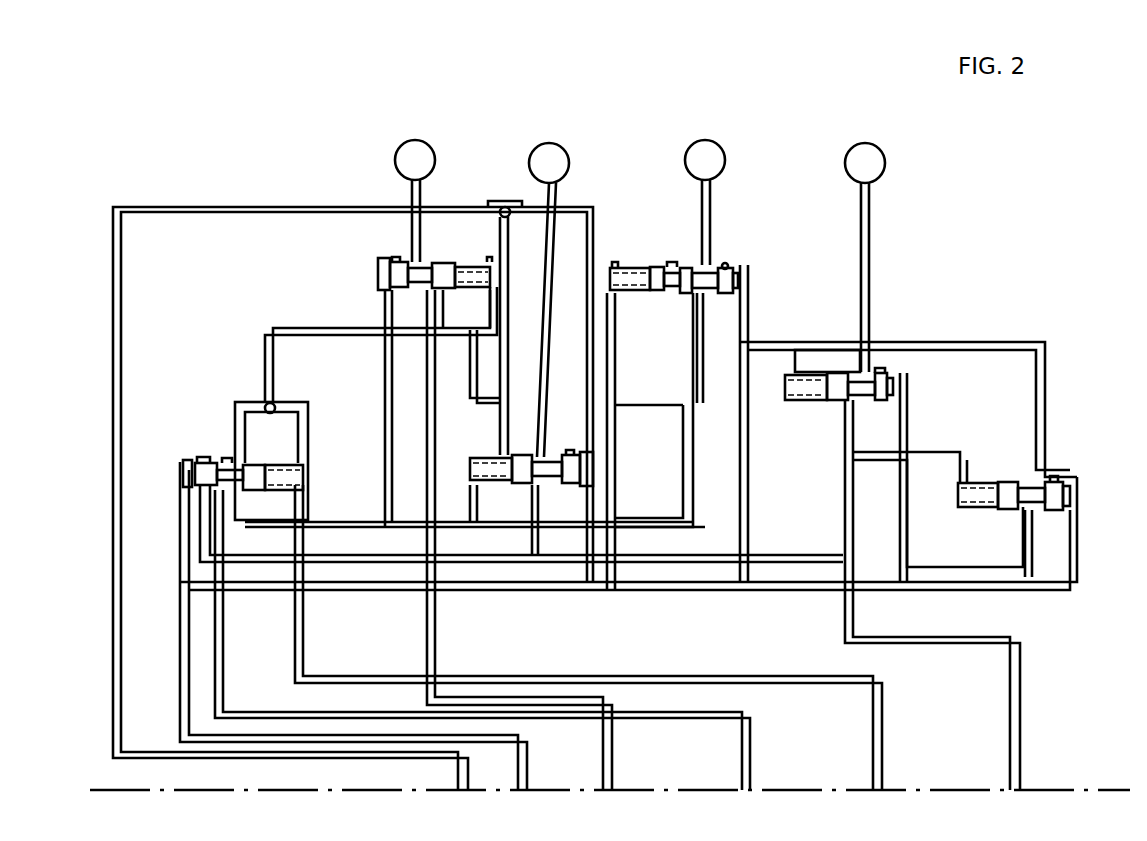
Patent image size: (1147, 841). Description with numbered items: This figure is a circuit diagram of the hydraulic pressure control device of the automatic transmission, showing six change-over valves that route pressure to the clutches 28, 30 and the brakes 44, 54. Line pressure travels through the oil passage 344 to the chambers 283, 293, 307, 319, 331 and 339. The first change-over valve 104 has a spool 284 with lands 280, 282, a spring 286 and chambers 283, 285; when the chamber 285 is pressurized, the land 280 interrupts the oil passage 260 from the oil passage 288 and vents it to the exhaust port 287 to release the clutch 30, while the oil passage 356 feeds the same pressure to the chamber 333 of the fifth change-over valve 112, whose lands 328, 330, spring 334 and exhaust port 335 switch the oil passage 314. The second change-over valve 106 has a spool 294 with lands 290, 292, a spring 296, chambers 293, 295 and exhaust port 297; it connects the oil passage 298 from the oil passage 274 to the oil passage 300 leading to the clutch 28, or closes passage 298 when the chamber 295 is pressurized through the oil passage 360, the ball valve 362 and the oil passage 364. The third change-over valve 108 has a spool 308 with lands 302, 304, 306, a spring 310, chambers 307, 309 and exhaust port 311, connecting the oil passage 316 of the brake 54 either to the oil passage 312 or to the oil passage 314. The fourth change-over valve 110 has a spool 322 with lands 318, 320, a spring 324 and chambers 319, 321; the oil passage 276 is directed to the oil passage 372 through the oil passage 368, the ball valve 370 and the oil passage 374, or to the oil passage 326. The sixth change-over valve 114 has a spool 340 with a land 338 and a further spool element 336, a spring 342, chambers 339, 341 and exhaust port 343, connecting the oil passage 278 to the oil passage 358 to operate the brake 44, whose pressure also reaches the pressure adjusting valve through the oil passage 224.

The clutch 28 is at (566, 153).
The clutch 30 is at (878, 170).
The brake 44 is at (433, 161).
The brake 54 is at (724, 160).
The first change-over valve 104 is at (874, 448).
The second change-over valve 106 is at (530, 487).
The third change-over valve 108 is at (697, 291).
The fourth change-over valve 110 is at (598, 492).
The fifth change-over valve 112 is at (1030, 503).
The sixth change-over valve 114 is at (405, 371).
The oil passage 224 is at (380, 206).
The oil passage 260 is at (840, 498).
The oil passage 274 is at (313, 637).
The oil passage 276 is at (228, 640).
The oil passage 278 is at (445, 384).
The land 280 is at (827, 361).
The land 282 is at (878, 370).
The hydraulic pressure chamber 283 is at (895, 390).
The spool 284 is at (921, 374).
The hydraulic pressure chamber 285 is at (790, 405).
The spring 286 is at (830, 403).
The exhaust port 287 is at (891, 404).
The oil passage 288 is at (870, 225).
The land 290 is at (526, 455).
The land 292 is at (569, 455).
The hydraulic pressure chamber 293 is at (597, 465).
The spool 294 is at (546, 495).
The hydraulic pressure chamber 295 is at (472, 482).
The spring 296 is at (502, 488).
The exhaust port 297 is at (590, 487).
The oil passage 298 is at (538, 632).
The oil passage 300 is at (540, 414).
The land 302 is at (652, 266).
The land 304 is at (680, 263).
The land 306 is at (726, 262).
The hydraulic pressure chamber 307 is at (740, 286).
The spool 308 is at (712, 310).
The hydraulic pressure chamber 309 is at (612, 263).
The spring 310 is at (635, 292).
The exhaust port 311 is at (675, 305).
The oil passage 312 is at (247, 528).
The oil passage 314 is at (754, 340).
The oil passage 316 is at (711, 208).
The land 318 is at (205, 458).
The hydraulic pressure chamber 319 is at (185, 483).
The land 320 is at (255, 490).
The hydraulic pressure chamber 321 is at (296, 468).
The spool 322 is at (223, 458).
The spring 324 is at (294, 489).
The oil passage 326 is at (312, 556).
The land 328 is at (1012, 470).
The land 330 is at (1055, 476).
The hydraulic pressure chamber 331 is at (1072, 500).
The hydraulic pressure chamber 333 is at (960, 510).
The spring 334 is at (1005, 510).
The exhaust port 335 is at (1063, 515).
The valve spool 336 is at (397, 256).
The land 338 is at (460, 240).
The hydraulic pressure chamber 339 is at (380, 278).
The spool 340 is at (435, 328).
The hydraulic pressure chamber 341 is at (490, 250).
The spring 342 is at (486, 300).
The exhaust port 343 is at (382, 295).
The oil passage 344 is at (460, 595).
The oil passage 356 is at (940, 455).
The oil passage 358 is at (420, 194).
The oil passage 360 is at (504, 210).
The ball valve 362 is at (505, 207).
The oil passage 364 is at (510, 238).
The oil passage 368 is at (273, 437).
The ball valve 370 is at (291, 440).
The oil passage 372 is at (313, 336).
The oil passage 374 is at (308, 430).